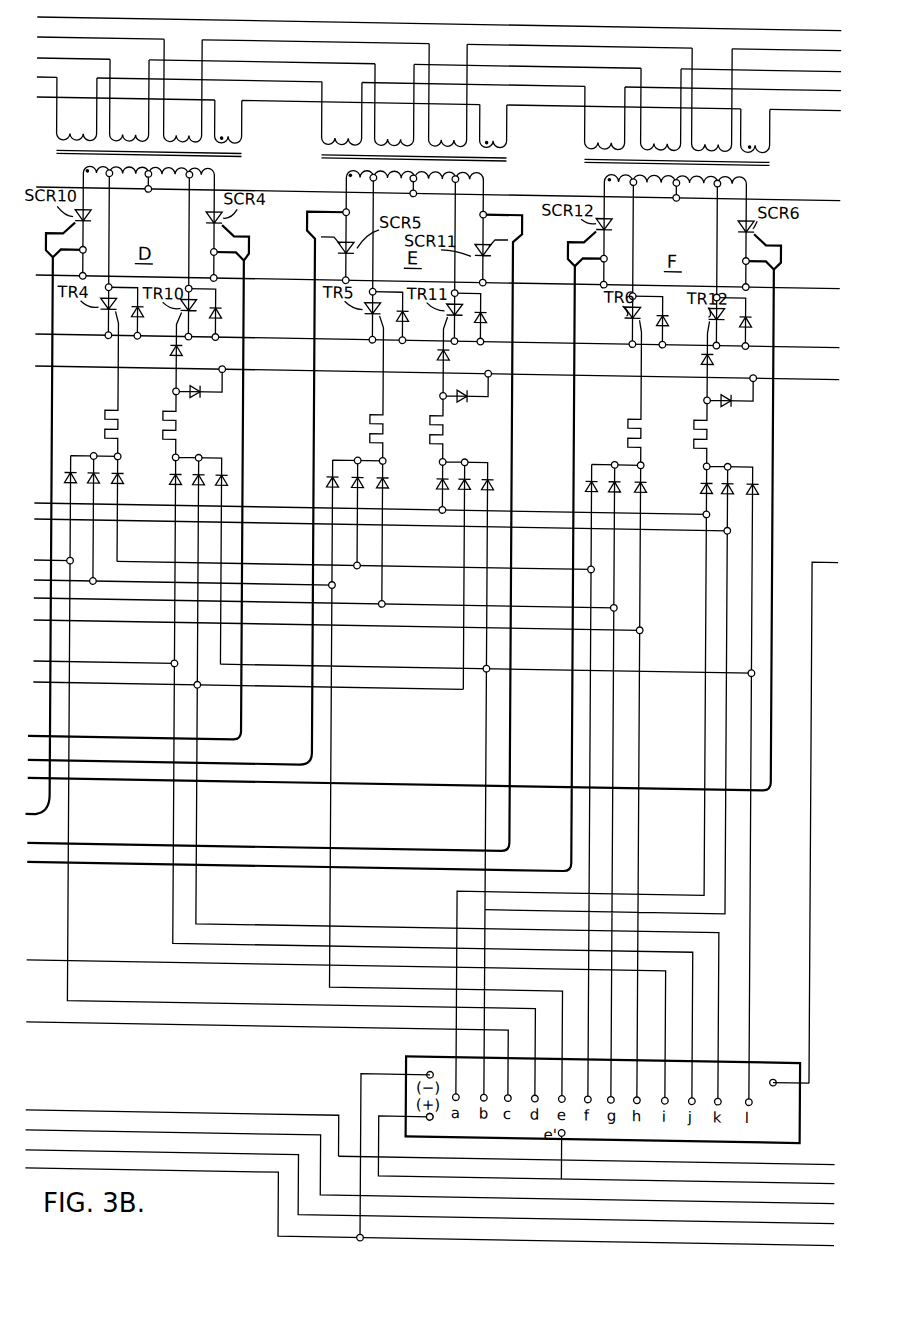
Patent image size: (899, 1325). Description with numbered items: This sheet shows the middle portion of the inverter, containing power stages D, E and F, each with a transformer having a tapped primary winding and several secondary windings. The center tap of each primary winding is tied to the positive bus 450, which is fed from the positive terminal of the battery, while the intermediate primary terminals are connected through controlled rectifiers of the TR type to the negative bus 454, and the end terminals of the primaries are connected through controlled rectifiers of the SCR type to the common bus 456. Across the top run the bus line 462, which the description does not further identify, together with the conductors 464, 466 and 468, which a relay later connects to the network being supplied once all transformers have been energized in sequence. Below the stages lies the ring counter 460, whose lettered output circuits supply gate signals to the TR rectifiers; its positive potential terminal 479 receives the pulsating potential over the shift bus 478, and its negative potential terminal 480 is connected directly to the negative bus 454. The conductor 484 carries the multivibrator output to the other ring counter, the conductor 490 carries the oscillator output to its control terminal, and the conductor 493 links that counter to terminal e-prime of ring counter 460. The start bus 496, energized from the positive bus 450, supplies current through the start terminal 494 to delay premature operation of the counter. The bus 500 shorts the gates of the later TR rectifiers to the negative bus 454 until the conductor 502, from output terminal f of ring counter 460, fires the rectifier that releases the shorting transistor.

The positive bus 450 is at (226, 189).
The negative bus 454 is at (75, 334).
The common bus 456 is at (273, 268).
The ring counter 460 is at (804, 1099).
The primary bus line 462 is at (489, 17).
The conductor 464 is at (495, 37).
The conductor 466 is at (499, 58).
The conductor 468 is at (502, 77).
The shift bus 478 is at (430, 1110).
The positive potential terminal 479 is at (434, 1113).
The negative potential terminal 480 is at (430, 1068).
The conductor 484 is at (72, 1148).
The conductor 490 is at (72, 1129).
The conductor 493 is at (72, 1108).
The start terminal 494 is at (780, 1066).
The start bus 496 is at (813, 986).
The bus 500 is at (70, 359).
The conductor 502 is at (798, 1152).